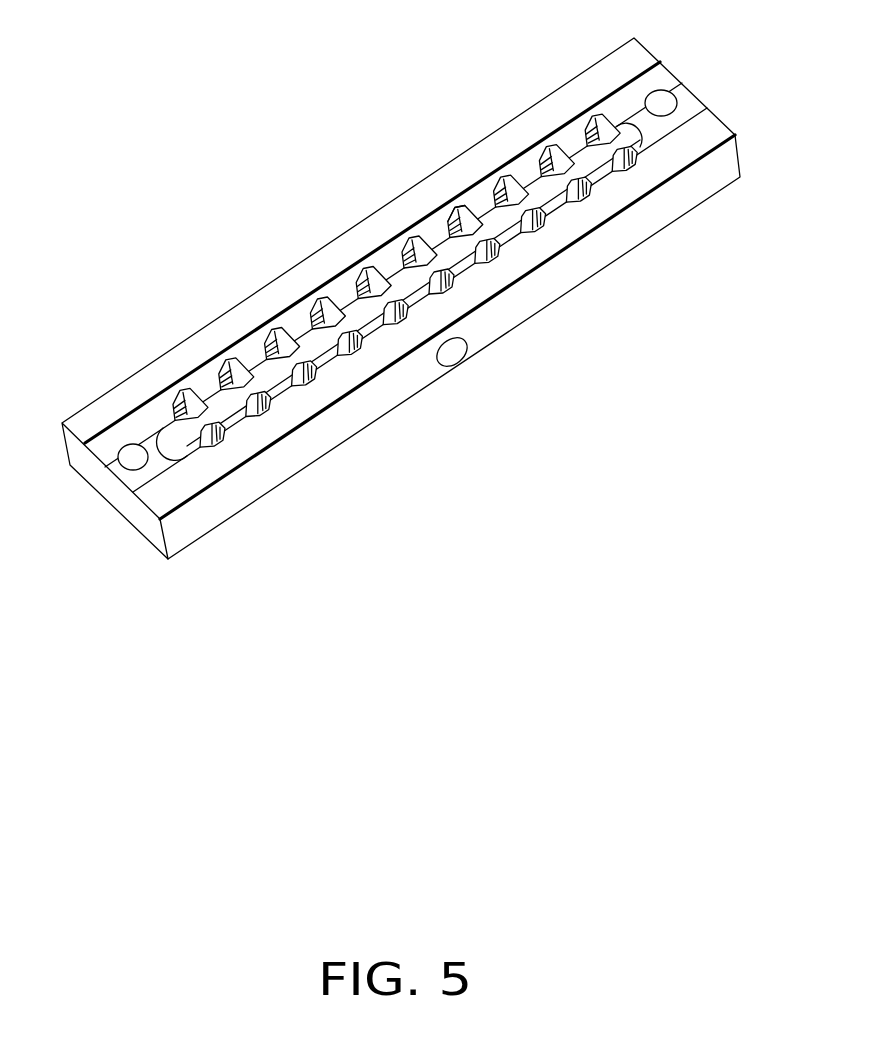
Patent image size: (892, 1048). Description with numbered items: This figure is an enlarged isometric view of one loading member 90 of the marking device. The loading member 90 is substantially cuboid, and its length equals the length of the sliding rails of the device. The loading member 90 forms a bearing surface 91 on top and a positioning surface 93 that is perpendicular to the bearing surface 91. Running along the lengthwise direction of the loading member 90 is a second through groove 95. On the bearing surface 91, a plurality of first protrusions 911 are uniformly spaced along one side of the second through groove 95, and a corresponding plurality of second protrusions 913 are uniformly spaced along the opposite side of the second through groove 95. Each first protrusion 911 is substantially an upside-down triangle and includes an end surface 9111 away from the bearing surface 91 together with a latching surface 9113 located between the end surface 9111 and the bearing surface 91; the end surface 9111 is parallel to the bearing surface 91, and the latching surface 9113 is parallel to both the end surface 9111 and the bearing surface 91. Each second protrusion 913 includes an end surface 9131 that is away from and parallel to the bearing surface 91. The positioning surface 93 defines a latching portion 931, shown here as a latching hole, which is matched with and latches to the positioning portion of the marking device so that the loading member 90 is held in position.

The loading member 90 is at (396, 298).
The bearing surface 91 is at (401, 298).
The first protrusion 911 is at (320, 303).
The end surface 9111 is at (462, 218).
The latching surface 9113 is at (437, 220).
The second protrusion 913 is at (355, 353).
The end surface 9131 is at (448, 292).
The positioning surface 93 is at (450, 347).
The latching portion 931 is at (450, 352).
The second through groove 95 is at (595, 167).